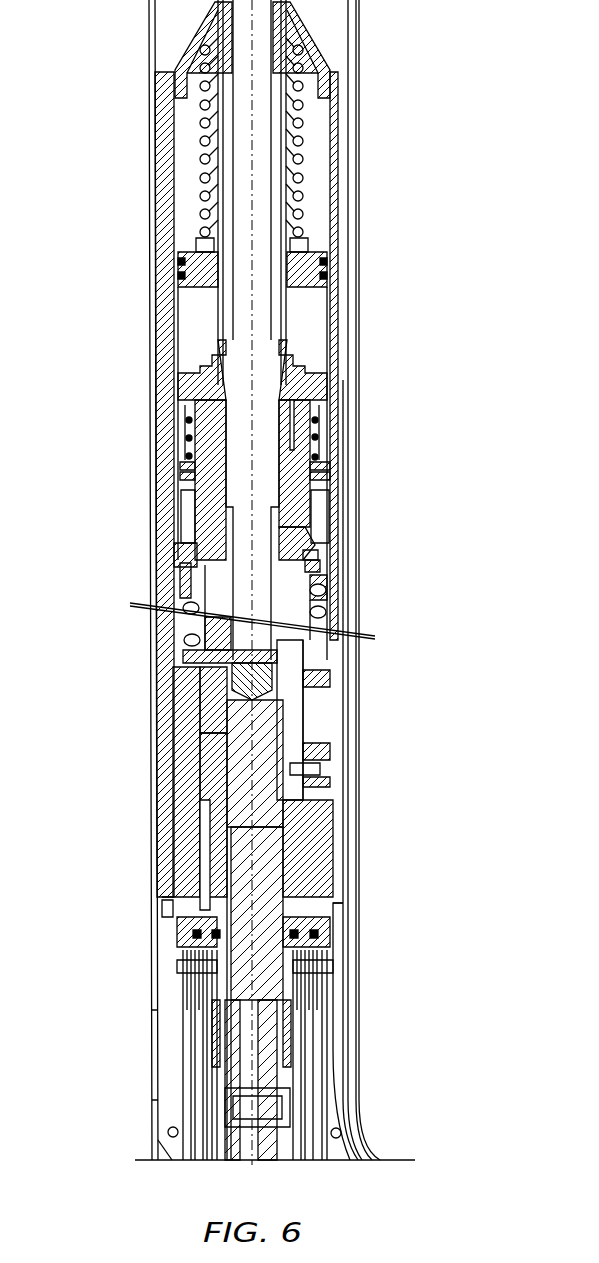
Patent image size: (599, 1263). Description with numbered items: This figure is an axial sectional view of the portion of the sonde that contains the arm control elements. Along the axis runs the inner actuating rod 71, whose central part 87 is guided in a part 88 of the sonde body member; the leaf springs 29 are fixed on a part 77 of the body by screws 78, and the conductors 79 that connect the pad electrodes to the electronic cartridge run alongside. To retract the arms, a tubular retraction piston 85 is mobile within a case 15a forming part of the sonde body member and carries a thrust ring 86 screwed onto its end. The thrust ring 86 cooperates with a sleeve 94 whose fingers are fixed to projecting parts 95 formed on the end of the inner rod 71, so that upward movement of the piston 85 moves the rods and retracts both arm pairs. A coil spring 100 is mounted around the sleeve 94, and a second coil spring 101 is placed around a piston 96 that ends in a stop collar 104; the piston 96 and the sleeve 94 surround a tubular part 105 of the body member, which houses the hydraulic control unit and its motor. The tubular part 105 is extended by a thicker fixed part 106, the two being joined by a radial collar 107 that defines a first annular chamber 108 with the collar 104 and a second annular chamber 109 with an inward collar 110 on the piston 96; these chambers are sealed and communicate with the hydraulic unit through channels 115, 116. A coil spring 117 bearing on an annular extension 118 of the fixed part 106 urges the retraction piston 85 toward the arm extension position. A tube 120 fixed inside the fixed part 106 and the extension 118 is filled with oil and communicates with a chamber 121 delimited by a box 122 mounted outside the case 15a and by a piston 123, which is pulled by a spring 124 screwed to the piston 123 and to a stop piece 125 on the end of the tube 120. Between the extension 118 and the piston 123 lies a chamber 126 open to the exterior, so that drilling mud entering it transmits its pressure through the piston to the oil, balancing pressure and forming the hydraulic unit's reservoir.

The case 15a is at (160, 575).
The leaf springs 29 is at (190, 990).
The second rod 71 is at (212, 783).
The part of the sonde body member 77 is at (318, 936).
The screws 78 is at (325, 960).
The conductors 79 is at (340, 1062).
The tubular retraction piston 85 is at (183, 661).
The thrust ring 86 is at (320, 696).
The central part 87 is at (295, 856).
The part of the sonde body member 88 is at (335, 812).
The sleeve 94 is at (182, 690).
The projecting parts 95 is at (184, 722).
The piston 96 is at (366, 636).
The coil spring 100 is at (302, 662).
The second coil spring 101 is at (322, 606).
The stop collar 104 is at (310, 562).
The tubular part 105 is at (185, 632).
The fixed part 106 is at (188, 527).
The radial collar 107 is at (300, 556).
The first annular chamber 108 is at (306, 549).
The second annular chamber 109 is at (318, 515).
The collar 110 is at (184, 470).
The channel 115 is at (322, 590).
The channel 116 is at (292, 545).
The coil spring 117 is at (318, 452).
The annular extension 118 is at (186, 410).
The tube 120 is at (316, 354).
The chamber 121 is at (310, 128).
The box 122 is at (332, 70).
The piston 123 is at (318, 268).
The spring 124 is at (204, 156).
The stop piece 125 is at (196, 62).
The chamber 126 is at (197, 323).